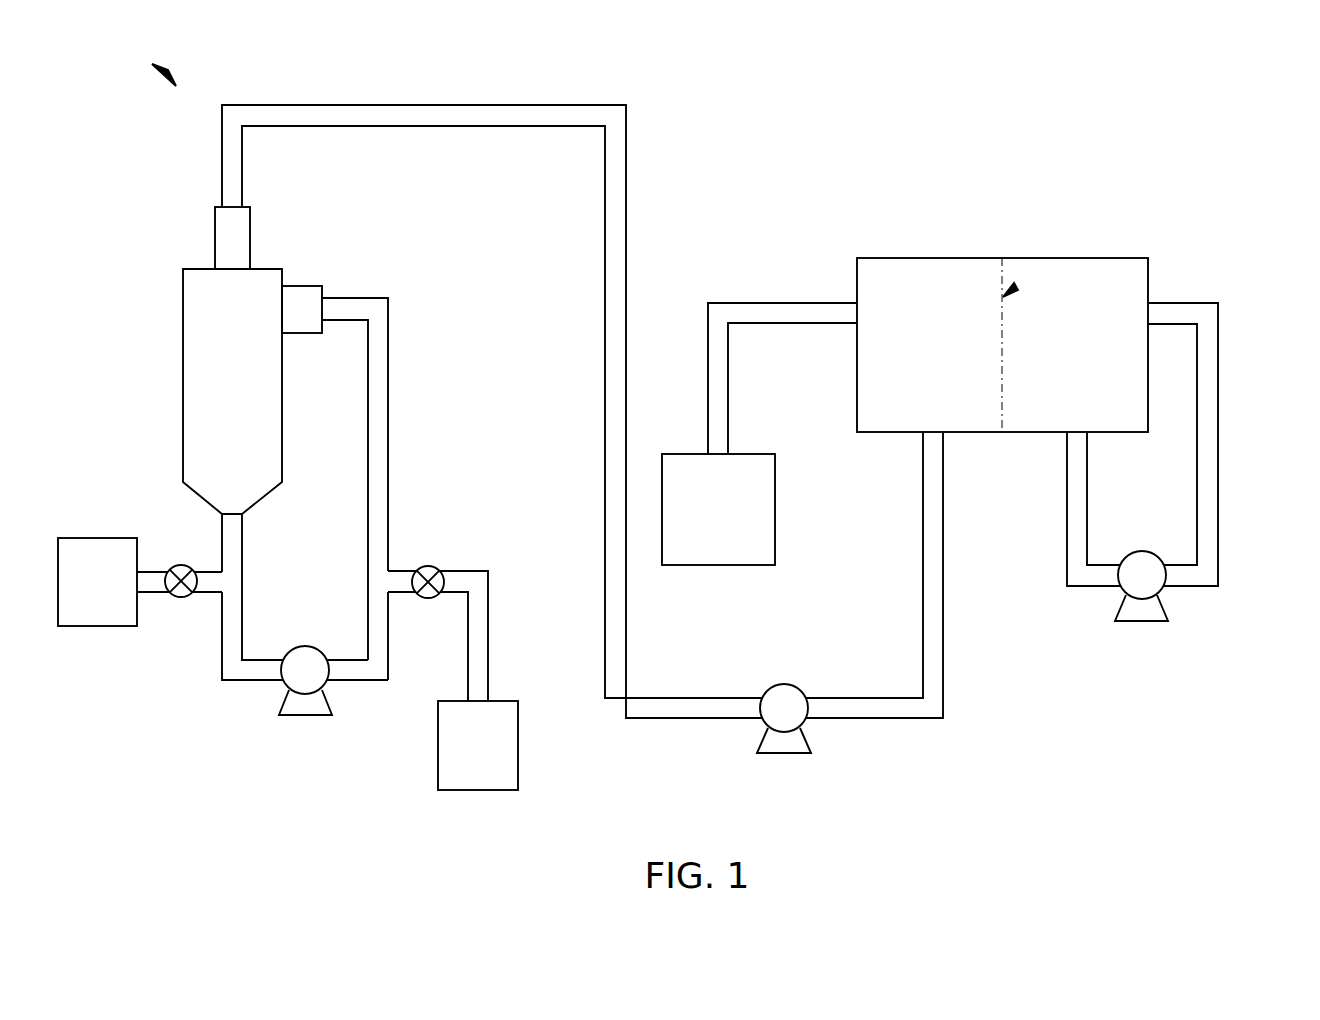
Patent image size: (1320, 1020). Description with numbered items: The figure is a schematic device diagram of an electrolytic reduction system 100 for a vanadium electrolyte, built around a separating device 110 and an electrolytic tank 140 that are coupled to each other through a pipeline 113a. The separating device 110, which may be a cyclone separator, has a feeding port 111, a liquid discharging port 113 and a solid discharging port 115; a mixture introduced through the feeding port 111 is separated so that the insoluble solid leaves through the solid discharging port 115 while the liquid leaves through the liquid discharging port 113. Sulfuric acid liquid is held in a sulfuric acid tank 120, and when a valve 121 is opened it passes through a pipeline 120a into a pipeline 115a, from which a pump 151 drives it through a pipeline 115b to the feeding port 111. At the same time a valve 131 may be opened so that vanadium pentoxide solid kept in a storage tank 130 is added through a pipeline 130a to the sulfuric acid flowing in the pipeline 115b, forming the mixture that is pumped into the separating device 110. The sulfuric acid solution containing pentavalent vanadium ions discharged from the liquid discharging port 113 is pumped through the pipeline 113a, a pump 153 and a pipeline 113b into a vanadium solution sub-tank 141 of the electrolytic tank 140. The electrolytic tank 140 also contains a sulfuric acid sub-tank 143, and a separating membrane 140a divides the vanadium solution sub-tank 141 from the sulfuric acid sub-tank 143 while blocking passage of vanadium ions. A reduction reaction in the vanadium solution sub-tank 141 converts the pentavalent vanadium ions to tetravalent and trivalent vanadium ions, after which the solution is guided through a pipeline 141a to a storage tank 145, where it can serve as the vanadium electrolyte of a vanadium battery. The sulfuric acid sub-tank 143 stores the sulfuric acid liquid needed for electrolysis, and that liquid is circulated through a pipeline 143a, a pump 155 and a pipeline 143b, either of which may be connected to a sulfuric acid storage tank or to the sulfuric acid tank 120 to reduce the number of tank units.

The electrolytic reduction system 100 is at (152, 64).
The separating device 110 is at (208, 390).
The feeding port 111 is at (299, 285).
The liquid discharging port 113 is at (214, 232).
The pipeline 113a is at (432, 104).
The pipeline 113b is at (893, 720).
The solid discharging port 115 is at (219, 513).
The pipeline 115a is at (244, 580).
The pipeline 115b is at (390, 412).
The sulfuric acid tank 120 is at (73, 597).
The pipeline 120a is at (155, 594).
The valve 121 is at (177, 603).
The storage tank 130 is at (454, 760).
The pipeline 130a is at (490, 636).
The valve 131 is at (427, 565).
The electrolytic tank 140 is at (935, 256).
The separating membrane 140a is at (1018, 290).
The vanadium solution sub-tank 141 is at (904, 360).
The pipeline 141a is at (788, 301).
The sulfuric acid sub-tank 143 is at (1051, 360).
The pipeline 143a is at (1220, 447).
The pipeline 143b is at (1066, 490).
The storage tank 145 is at (693, 523).
The pump 151 is at (307, 718).
The pump 153 is at (786, 755).
The pump 155 is at (1143, 623).